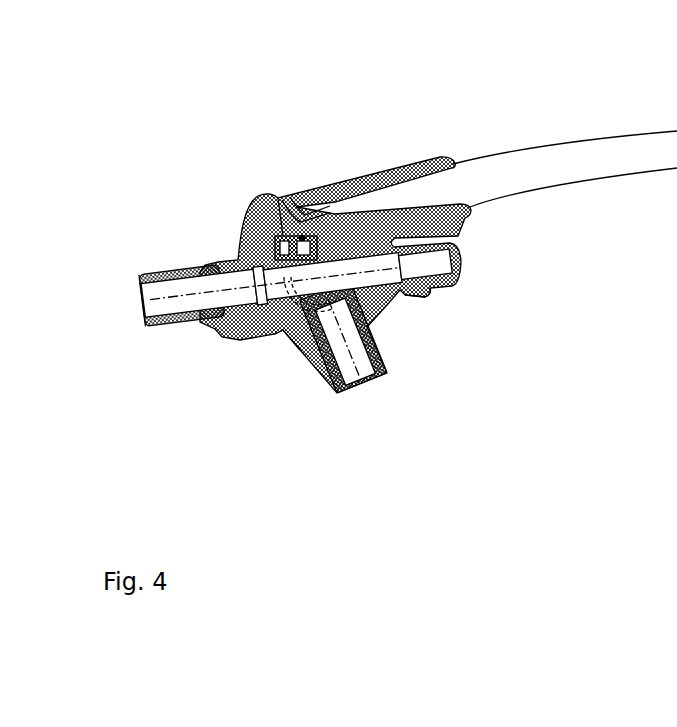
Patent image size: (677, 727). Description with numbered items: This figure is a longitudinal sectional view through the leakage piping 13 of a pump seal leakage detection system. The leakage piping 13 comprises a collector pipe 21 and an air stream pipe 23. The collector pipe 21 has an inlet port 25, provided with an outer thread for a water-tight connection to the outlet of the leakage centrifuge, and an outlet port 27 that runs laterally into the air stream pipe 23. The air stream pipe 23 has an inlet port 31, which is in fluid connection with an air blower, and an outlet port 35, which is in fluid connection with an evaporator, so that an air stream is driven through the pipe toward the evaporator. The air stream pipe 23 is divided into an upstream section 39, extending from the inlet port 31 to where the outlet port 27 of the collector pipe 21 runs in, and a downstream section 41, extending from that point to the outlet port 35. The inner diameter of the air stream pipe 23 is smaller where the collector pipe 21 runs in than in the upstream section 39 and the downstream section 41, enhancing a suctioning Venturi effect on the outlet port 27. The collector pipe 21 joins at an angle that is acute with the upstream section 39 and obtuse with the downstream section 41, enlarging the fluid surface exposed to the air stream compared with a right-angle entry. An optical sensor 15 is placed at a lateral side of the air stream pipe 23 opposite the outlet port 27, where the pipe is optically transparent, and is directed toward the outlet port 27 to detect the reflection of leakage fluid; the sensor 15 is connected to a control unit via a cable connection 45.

The leakage piping 13 is at (293, 117).
The sensor 15 is at (240, 212).
The collector pipe 21 is at (380, 353).
The air stream pipe 23 is at (180, 333).
The inlet port 25 is at (352, 372).
The outlet port 27 is at (277, 337).
The inlet port 31 is at (442, 262).
The outlet port 35 is at (140, 313).
The upstream section 39 is at (425, 290).
The downstream section 41 is at (170, 297).
The cable connection 45 is at (555, 143).